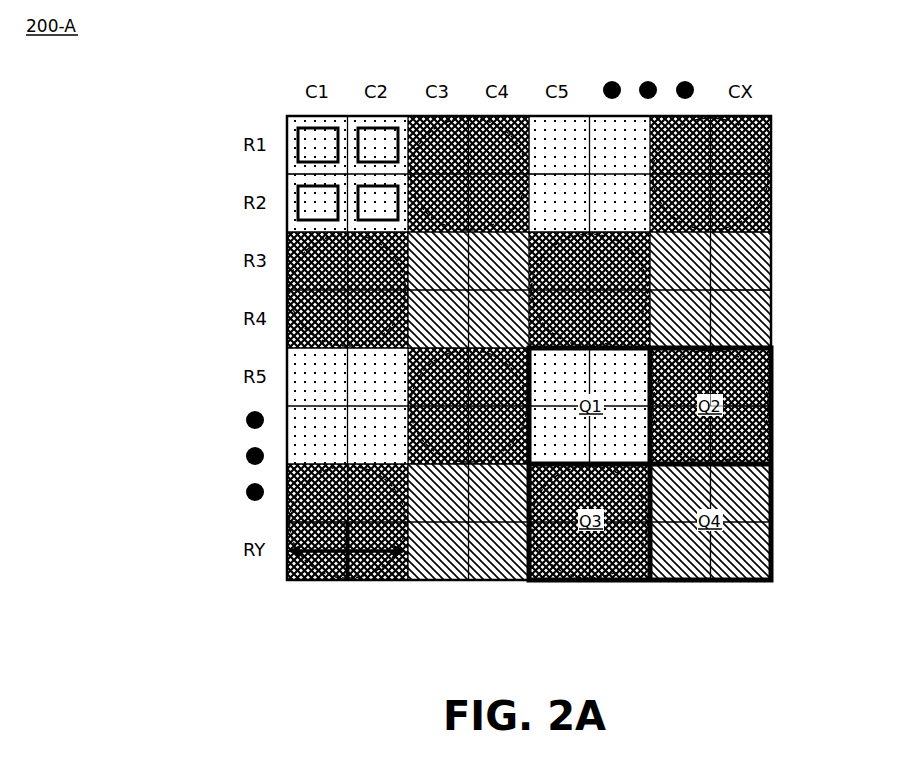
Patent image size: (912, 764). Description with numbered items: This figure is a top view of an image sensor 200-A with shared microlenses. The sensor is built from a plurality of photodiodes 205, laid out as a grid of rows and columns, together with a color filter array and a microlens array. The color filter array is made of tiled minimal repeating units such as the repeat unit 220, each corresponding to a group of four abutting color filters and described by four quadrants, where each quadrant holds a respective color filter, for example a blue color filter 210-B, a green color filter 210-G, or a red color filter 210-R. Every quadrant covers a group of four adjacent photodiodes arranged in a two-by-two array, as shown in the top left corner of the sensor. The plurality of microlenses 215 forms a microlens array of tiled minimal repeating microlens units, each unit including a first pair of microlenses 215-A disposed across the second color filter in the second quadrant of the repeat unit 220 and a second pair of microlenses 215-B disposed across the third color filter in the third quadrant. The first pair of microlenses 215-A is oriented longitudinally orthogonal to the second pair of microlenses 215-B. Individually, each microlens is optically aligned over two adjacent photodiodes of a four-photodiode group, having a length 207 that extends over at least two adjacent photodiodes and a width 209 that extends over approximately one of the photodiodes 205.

The image sensor 200-A is at (529, 348).
The photodiodes 205 is at (287, 114).
The blue color filter 210-B is at (583, 114).
The green color filter 210-G is at (773, 114).
The red color filter 210-R is at (766, 262).
The repeat unit 220 is at (743, 342).
The first pair of microlenses 215-A is at (774, 361).
The second pair of microlenses 215-B is at (641, 584).
The microlenses 215 is at (304, 578).
The width 209 is at (351, 582).
The length 207 is at (404, 560).